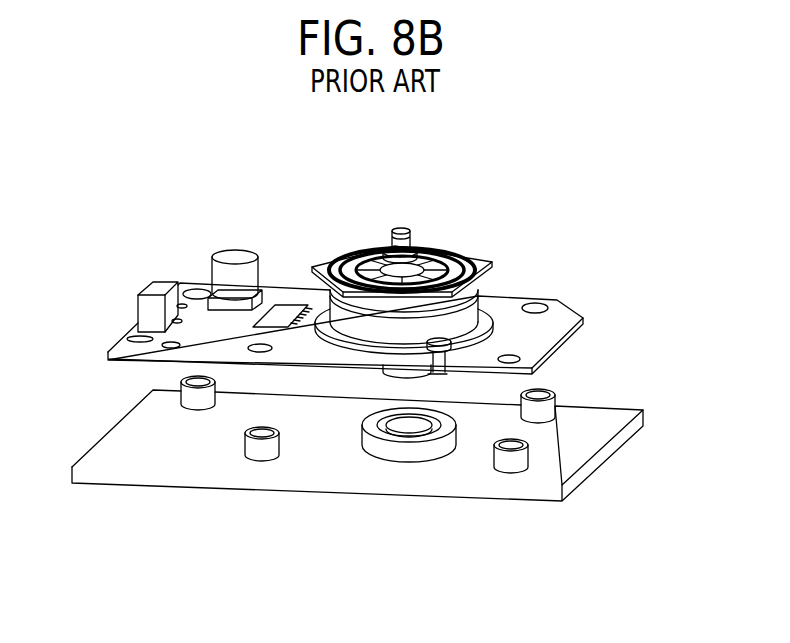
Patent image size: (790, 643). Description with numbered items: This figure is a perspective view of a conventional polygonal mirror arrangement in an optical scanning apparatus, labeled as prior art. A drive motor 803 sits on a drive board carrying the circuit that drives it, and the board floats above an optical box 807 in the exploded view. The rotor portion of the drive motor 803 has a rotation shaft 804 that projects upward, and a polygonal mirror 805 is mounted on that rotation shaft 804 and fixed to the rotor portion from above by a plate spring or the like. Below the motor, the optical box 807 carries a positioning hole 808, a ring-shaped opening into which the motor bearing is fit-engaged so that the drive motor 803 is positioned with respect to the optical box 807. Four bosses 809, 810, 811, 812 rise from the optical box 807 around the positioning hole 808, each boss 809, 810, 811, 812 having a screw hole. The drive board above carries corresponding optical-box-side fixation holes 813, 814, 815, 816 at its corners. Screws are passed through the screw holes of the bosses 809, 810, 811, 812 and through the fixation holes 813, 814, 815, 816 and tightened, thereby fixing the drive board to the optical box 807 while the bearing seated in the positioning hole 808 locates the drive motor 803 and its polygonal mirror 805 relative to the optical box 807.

The drive motor 803 is at (472, 310).
The rotation shaft 804 is at (399, 228).
The polygonal mirror 805 is at (475, 262).
The optical box 807 is at (607, 427).
The positioning hole 808 is at (408, 424).
The boss 809 is at (247, 432).
The boss 810 is at (180, 383).
The boss 811 is at (541, 391).
The boss 812 is at (520, 448).
The optical-box-side fixation hole 813 is at (273, 343).
The optical-box-side fixation hole 814 is at (203, 289).
The optical-box-side fixation hole 815 is at (548, 298).
The optical-box-side fixation hole 816 is at (508, 354).